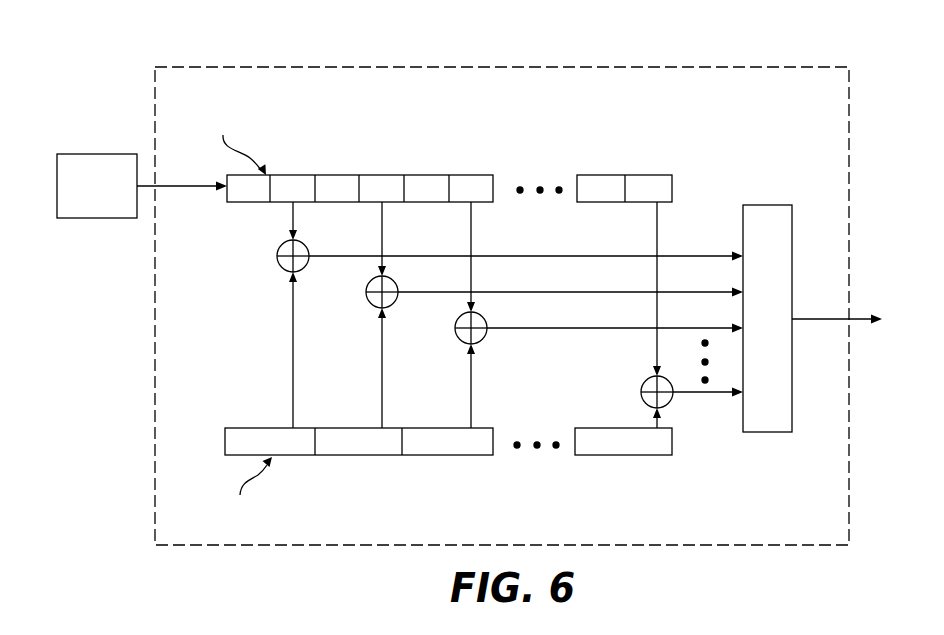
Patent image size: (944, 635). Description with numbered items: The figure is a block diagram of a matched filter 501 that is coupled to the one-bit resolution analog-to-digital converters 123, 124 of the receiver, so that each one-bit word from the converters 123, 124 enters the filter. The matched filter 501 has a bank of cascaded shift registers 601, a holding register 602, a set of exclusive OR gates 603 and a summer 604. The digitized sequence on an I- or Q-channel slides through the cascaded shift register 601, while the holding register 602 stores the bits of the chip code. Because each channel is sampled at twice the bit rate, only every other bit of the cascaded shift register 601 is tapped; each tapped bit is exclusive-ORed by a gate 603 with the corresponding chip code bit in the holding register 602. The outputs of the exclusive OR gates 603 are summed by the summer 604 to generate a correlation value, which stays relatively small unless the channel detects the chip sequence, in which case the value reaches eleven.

The matched filter 501 is at (124, 59).
The analog-to-digital converter 123 is at (127, 155).
The analog-to-digital converter 124 is at (113, 154).
The cascaded shift register 601 is at (307, 175).
The holding register 602 is at (332, 456).
The exclusive OR gate 603 is at (282, 268).
The summer 604 is at (743, 223).